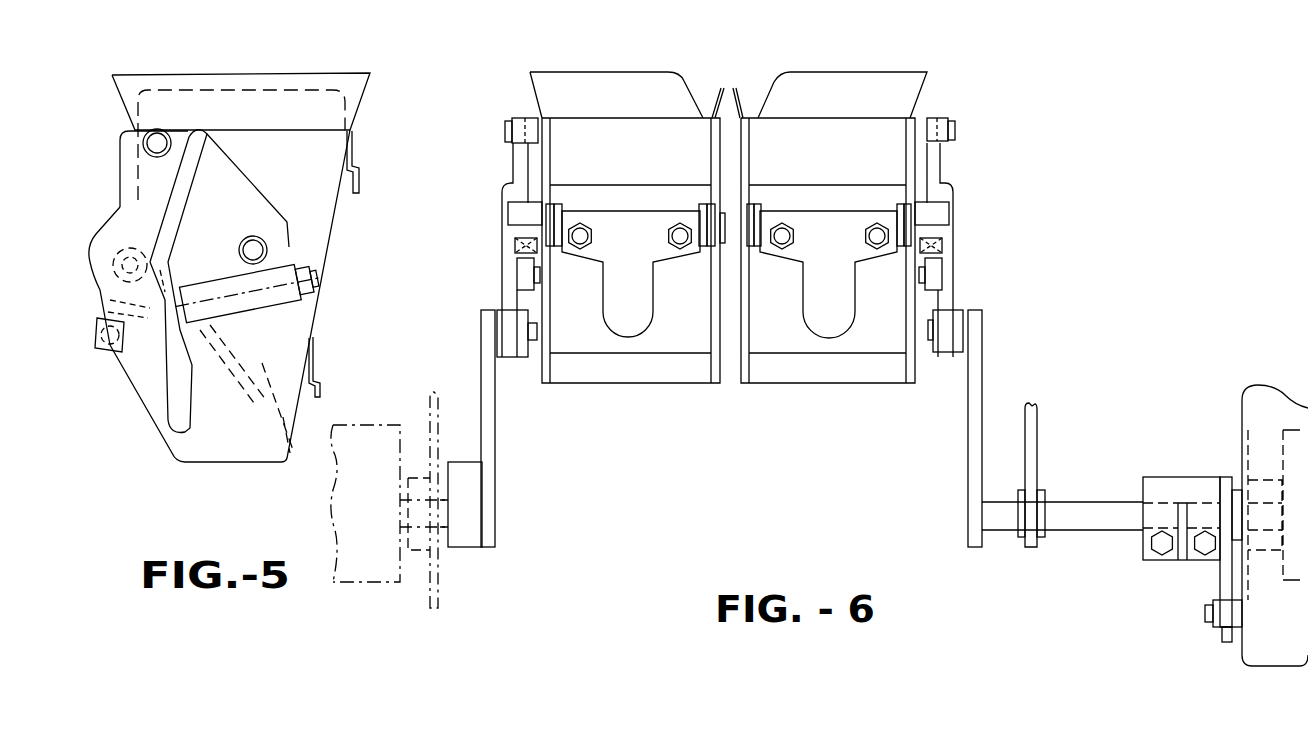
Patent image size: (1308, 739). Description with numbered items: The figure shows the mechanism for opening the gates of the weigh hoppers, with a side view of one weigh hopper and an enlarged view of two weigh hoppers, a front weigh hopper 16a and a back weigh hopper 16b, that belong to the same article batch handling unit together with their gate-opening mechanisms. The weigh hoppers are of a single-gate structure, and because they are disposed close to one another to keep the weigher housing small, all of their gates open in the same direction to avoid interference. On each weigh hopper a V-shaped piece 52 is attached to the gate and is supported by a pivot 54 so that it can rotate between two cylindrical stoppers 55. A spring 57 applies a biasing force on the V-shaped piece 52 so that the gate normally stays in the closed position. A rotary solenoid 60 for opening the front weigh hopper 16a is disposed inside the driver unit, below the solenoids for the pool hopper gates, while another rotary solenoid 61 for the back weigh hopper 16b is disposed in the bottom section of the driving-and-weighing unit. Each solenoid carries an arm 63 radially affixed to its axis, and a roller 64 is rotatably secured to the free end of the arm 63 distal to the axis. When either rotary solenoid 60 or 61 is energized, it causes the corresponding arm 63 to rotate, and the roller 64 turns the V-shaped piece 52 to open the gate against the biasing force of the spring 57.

In FIG. 5, the front weigh hopper 16a is at (336, 271).
In FIG. 6, the front weigh hopper 16a is at (687, 337).
In FIG. 6, the back weigh hopper 16b is at (788, 335).
In FIG. 5, the V-shaped piece 52 is at (157, 203).
In FIG. 6, the V-shaped piece 52 is at (510, 183).
In FIG. 5, the pivot 54 is at (167, 263).
In FIG. 5, the cylindrical stoppers 55 is at (157, 143).
In FIG. 6, the cylindrical stoppers 55 is at (530, 122).
In FIG. 5, the spring 57 is at (218, 308).
In FIG. 6, the spring 57 is at (507, 247).
In FIG. 6, the rotary solenoid 60 is at (370, 440).
In FIG. 6, the rotary solenoid 61 is at (1290, 410).
In FIG. 6, the arm 63 is at (490, 442).
In FIG. 6, the roller 64 is at (523, 338).